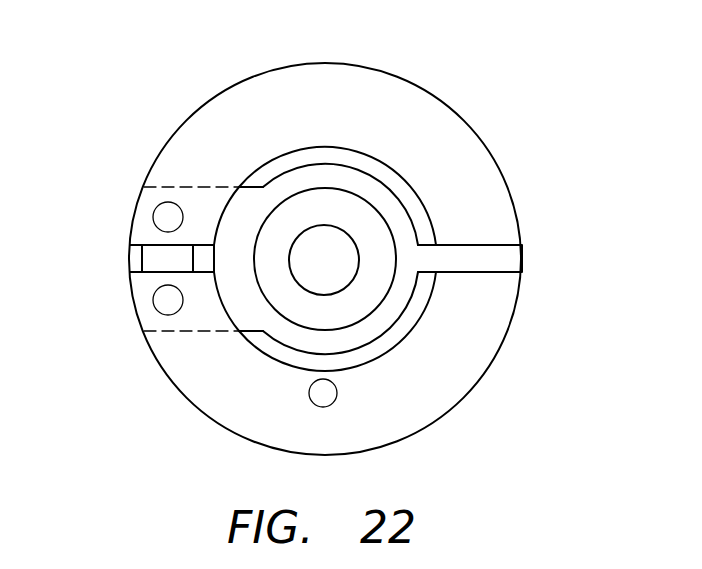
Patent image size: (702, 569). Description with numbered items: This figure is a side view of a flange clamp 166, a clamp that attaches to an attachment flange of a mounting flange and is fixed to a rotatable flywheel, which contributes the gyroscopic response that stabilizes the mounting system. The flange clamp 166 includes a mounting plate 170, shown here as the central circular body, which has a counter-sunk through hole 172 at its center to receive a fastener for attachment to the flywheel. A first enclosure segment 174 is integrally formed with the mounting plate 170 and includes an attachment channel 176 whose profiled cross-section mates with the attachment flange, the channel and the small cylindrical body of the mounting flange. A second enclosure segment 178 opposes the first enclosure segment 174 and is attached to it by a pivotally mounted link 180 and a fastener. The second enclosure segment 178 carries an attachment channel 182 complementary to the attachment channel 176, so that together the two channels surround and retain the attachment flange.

The flange clamp 166 is at (474, 88).
The mounting plate 170 is at (237, 302).
The counter-sunk through hole 172 is at (306, 227).
The first enclosure segment 174 is at (250, 88).
The attachment channel 176 is at (298, 160).
The second enclosure segment 178 is at (447, 366).
The pivotally mounted link 180 is at (142, 262).
The attachment channel 182 is at (295, 357).